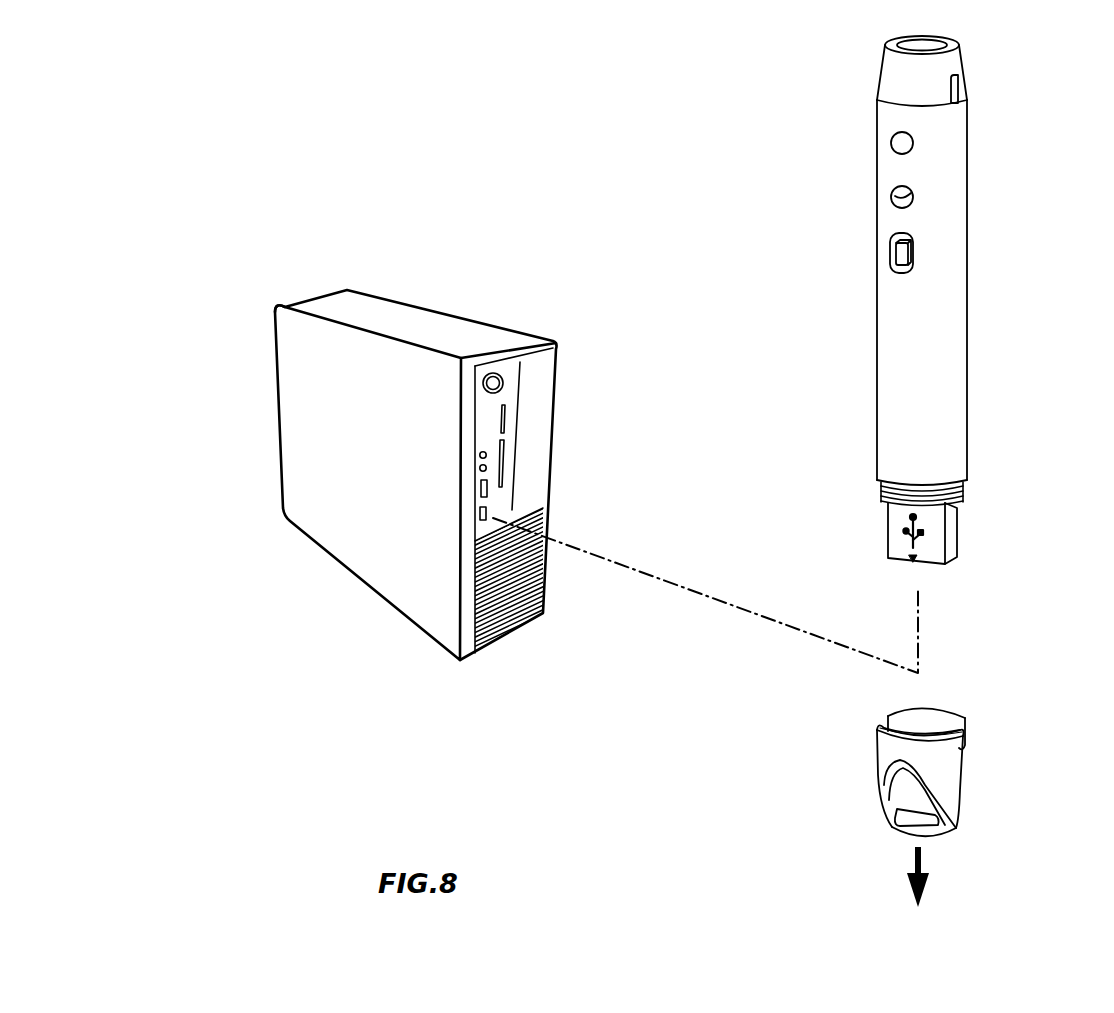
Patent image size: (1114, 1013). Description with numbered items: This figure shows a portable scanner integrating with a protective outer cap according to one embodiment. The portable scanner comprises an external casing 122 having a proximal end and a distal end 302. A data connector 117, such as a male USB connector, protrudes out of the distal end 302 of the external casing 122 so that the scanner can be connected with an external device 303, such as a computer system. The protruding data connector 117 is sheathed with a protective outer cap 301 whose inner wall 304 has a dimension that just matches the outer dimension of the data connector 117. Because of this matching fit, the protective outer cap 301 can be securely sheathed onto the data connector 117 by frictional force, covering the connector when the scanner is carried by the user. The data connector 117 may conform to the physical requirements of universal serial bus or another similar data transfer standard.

The external casing 122 is at (950, 265).
The distal end 302 is at (957, 472).
The data connector 117 is at (952, 538).
The inner wall 304 is at (937, 733).
The protective outer cap 301 is at (946, 782).
The external device 303 is at (390, 568).